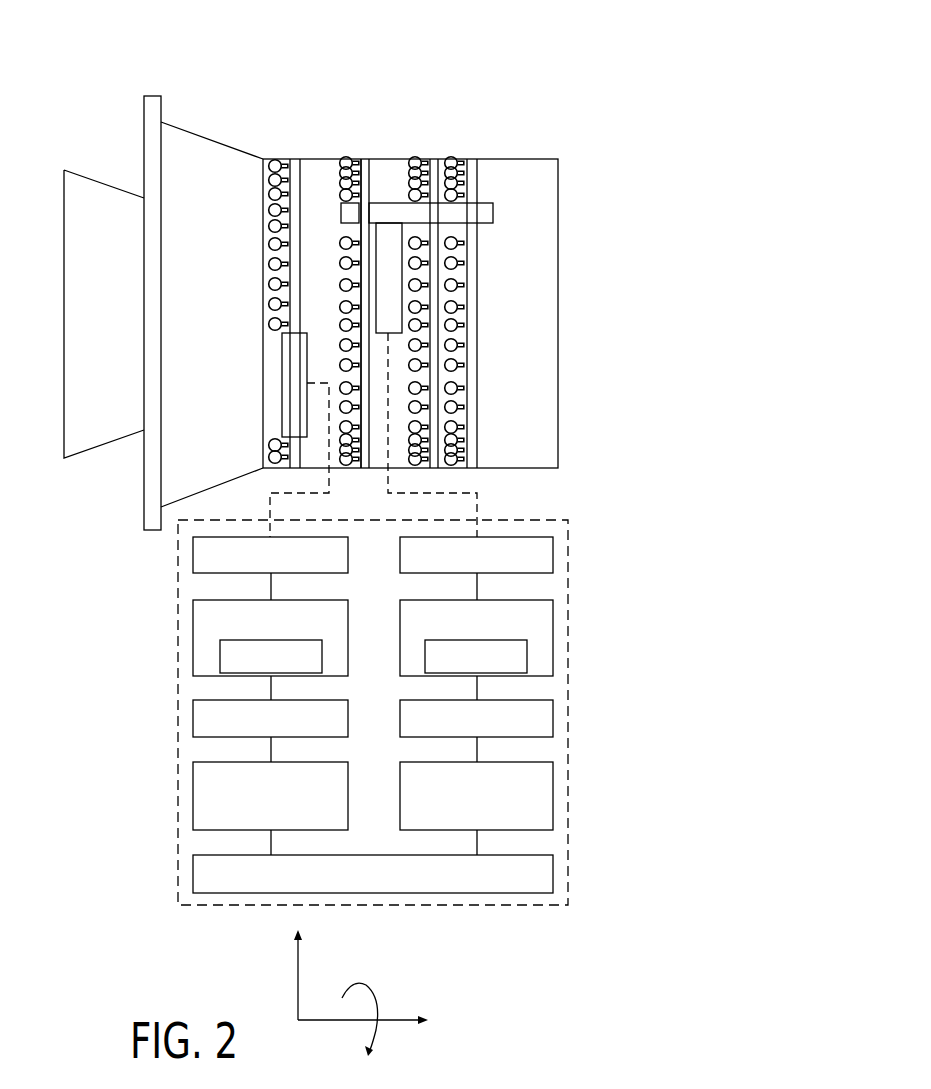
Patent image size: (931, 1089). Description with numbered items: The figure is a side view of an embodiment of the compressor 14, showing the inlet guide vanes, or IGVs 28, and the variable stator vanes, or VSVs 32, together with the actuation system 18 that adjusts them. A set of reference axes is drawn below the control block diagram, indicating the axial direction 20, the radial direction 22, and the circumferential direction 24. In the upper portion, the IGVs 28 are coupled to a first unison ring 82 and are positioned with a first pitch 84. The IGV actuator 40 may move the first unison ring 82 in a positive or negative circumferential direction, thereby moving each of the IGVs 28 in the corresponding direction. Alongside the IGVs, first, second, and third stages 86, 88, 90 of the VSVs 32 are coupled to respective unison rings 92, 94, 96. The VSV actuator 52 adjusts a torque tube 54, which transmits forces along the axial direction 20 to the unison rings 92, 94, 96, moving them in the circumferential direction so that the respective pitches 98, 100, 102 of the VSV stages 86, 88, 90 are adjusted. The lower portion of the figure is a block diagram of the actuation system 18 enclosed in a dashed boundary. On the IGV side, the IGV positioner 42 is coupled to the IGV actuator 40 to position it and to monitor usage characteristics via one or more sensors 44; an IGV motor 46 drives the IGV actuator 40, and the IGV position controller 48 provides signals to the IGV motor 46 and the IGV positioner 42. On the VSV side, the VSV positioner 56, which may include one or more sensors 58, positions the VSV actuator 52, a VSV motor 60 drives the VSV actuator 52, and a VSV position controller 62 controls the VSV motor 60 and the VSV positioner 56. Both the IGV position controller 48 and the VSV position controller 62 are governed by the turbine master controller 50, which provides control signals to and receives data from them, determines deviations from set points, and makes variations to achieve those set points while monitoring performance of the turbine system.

The compressor 14 is at (419, 50).
The actuation system 18 is at (107, 769).
The axial direction 20 is at (400, 1018).
The radial direction 22 is at (298, 980).
The circumferential direction 24 is at (371, 985).
The inlet guide vanes (IGVs) 28 is at (272, 159).
The variable stator vanes (VSVs) 32 is at (440, 253).
The IGV actuator 40 is at (282, 385).
The IGV positioner 42 is at (193, 637).
The sensor 44 is at (220, 657).
The IGV motor 46 is at (193, 718).
The IGV position controller 48 is at (193, 795).
The turbine master controller 50 is at (193, 873).
The VSV actuator 52 is at (376, 268).
The torque tube 54 is at (493, 212).
The VSV positioner 56 is at (553, 636).
The sensor 58 is at (527, 657).
The VSV motor 60 is at (553, 718).
The VSV position controller 62 is at (553, 794).
The first unison ring 82 is at (298, 159).
The first pitch 84 is at (252, 168).
The first stage of VSVs 86 is at (345, 159).
The second stage of VSVs 88 is at (412, 159).
The third stage of VSVs 90 is at (447, 159).
The unison ring 92 is at (366, 159).
The unison ring 94 is at (435, 159).
The unison ring 96 is at (473, 172).
The pitch 98 is at (333, 168).
The pitch 100 is at (394, 168).
The pitch 102 is at (443, 145).